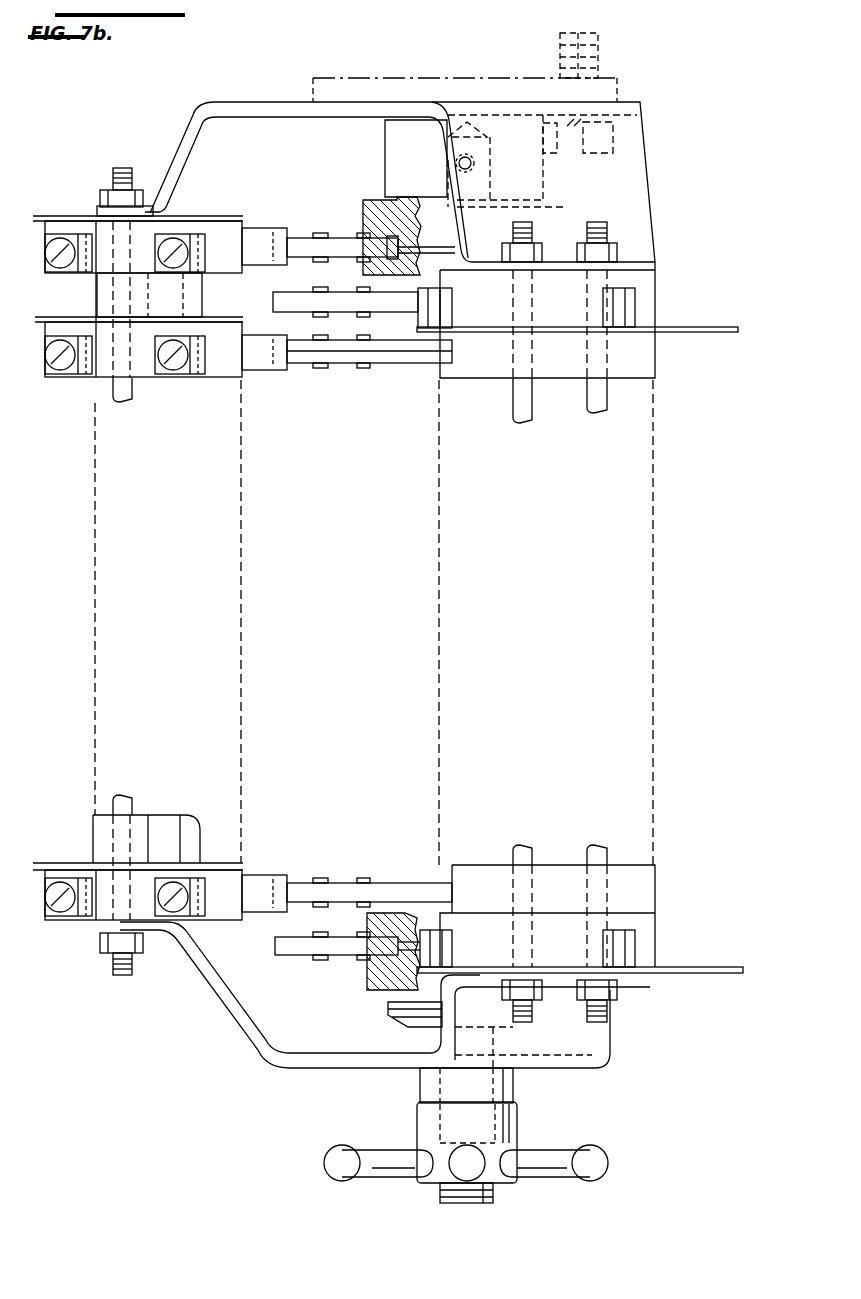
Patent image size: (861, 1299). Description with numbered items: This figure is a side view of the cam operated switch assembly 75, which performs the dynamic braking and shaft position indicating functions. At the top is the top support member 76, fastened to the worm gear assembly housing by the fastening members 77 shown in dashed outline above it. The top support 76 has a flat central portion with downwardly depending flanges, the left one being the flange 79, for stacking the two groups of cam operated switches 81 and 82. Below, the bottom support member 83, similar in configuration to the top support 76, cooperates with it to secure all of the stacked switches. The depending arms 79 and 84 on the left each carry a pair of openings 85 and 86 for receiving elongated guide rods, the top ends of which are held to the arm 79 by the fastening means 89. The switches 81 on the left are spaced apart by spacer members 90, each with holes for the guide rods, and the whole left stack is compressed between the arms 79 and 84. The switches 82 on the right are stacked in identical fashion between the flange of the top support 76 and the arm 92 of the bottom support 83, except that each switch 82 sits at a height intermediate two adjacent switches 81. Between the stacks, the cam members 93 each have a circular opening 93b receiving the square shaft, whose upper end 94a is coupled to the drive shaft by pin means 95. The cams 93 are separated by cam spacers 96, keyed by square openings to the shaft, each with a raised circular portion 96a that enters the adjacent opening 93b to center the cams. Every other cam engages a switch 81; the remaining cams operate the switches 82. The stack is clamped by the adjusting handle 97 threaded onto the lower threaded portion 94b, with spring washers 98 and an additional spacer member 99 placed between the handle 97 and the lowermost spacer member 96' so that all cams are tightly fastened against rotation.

The cam operated switch assembly 75 is at (180, 126).
The top support member 76 is at (264, 101).
The fastening members 77 is at (600, 60).
The depending flange 79 is at (97, 211).
The cam operated switches 81 is at (215, 233).
The cam operated switches 82 is at (648, 298).
The bottom support member 83 is at (306, 1068).
The depending arm 84 is at (100, 924).
The opening 85 is at (105, 200).
The opening 86 is at (122, 932).
The fastening means 89 is at (112, 186).
The spacer members 90 is at (177, 308).
The arm 92 is at (637, 988).
The cam members 93 is at (338, 250).
The circular opening 93b is at (390, 243).
The upper end of square shaft 94a is at (483, 155).
The lower threaded portion of square shaft 94b is at (462, 1206).
The pin means 95 is at (475, 168).
The cam spacer 96 is at (379, 222).
The raised circular-shaped portion 96a is at (416, 186).
The lowermost spacer member 96' is at (363, 938).
The adjusting handle 97 is at (428, 1184).
The spring washers 98 is at (388, 1010).
The additional spacer member 99 is at (421, 1080).